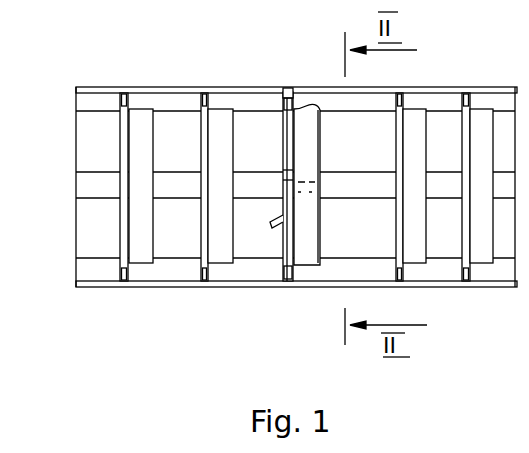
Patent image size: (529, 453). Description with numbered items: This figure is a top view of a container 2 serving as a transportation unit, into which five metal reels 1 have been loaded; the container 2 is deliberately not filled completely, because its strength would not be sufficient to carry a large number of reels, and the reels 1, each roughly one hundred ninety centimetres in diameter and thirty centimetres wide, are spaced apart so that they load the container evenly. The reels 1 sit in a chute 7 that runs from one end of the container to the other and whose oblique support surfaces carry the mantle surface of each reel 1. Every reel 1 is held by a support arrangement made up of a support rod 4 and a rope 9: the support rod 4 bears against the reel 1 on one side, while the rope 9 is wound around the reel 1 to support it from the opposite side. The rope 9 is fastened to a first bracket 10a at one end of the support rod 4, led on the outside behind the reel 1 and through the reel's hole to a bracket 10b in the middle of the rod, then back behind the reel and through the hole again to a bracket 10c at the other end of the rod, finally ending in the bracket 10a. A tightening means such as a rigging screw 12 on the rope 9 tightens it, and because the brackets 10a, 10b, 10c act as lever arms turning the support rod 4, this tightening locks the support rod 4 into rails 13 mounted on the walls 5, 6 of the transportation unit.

The metal reel 1 is at (220, 250).
The container 2 is at (140, 88).
The support rod 4 is at (285, 110).
The wall 5 is at (92, 87).
The wall 6 is at (105, 287).
The chute 7 is at (88, 148).
The rope 9 is at (283, 135).
The first bracket 10a is at (290, 103).
The bracket 10b is at (288, 273).
The bracket 10c is at (280, 175).
The rigging screw 12 is at (272, 228).
The rail 13 is at (412, 125).